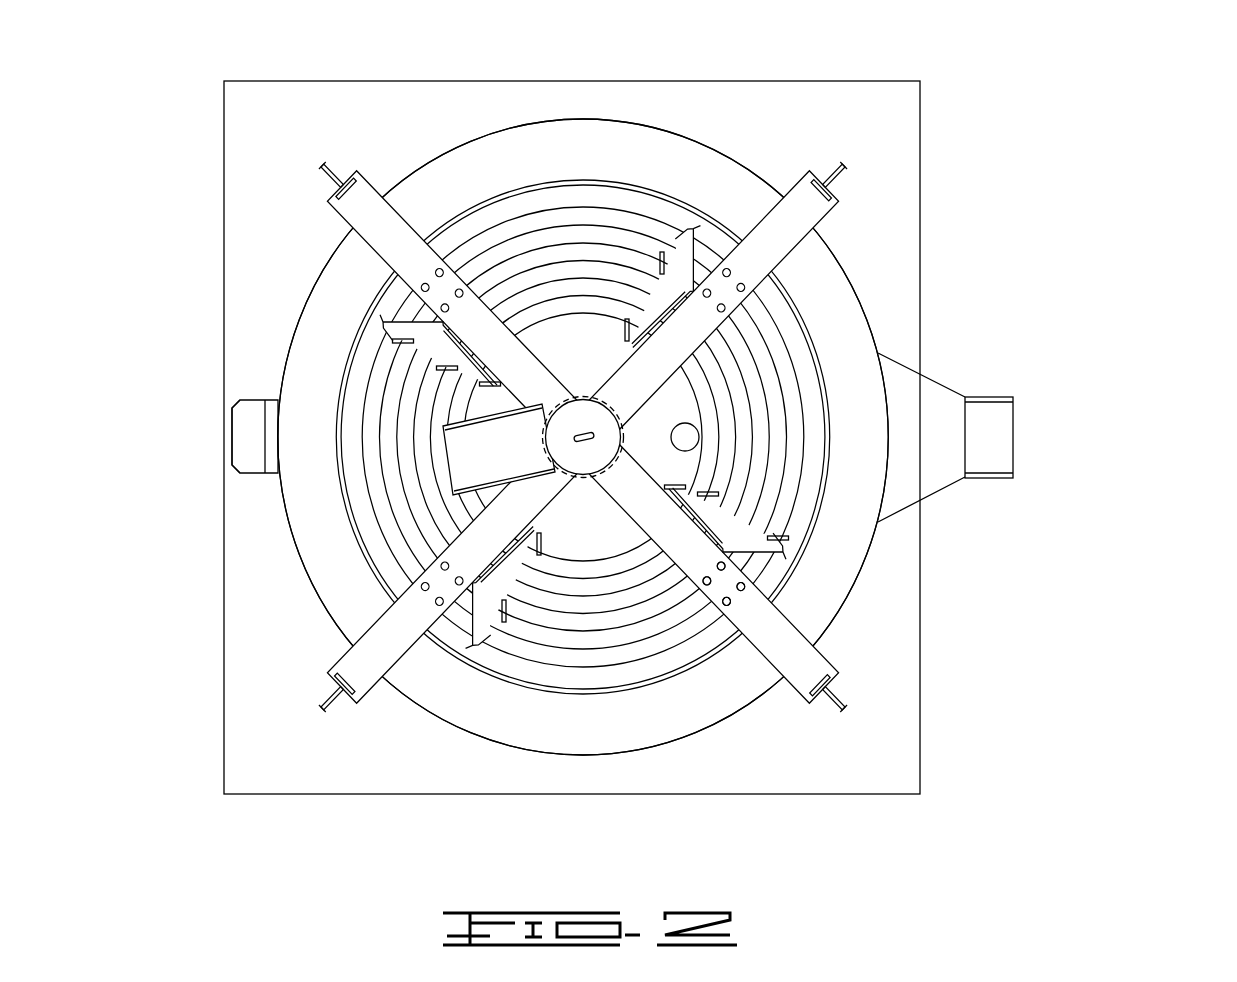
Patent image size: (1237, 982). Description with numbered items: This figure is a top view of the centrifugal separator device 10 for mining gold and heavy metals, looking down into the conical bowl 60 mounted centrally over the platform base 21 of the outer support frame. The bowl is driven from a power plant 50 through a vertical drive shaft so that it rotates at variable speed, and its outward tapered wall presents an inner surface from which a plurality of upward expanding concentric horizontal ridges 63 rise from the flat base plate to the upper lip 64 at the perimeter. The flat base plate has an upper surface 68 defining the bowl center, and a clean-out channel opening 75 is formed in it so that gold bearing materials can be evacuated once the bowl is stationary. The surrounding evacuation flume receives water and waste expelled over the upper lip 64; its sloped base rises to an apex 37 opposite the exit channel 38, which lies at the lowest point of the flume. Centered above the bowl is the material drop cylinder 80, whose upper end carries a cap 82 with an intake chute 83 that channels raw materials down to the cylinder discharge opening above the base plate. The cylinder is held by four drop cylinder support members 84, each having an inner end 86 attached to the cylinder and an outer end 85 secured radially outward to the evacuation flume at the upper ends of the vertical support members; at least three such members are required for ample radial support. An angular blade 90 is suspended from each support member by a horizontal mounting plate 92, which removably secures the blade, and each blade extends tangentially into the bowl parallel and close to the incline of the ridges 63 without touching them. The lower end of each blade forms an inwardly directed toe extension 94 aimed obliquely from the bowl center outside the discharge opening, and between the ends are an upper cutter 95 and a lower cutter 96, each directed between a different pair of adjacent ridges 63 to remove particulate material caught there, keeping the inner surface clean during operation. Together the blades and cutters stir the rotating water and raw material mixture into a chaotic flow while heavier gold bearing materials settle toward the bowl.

The centrifugal separator device 10 is at (1110, 89).
The platform base 21 is at (920, 163).
The apex 37 is at (275, 470).
The exit channel 38 is at (997, 431).
The power plant 50 is at (245, 445).
The conical bowl 60 is at (583, 197).
The concentric horizontal ridges 63 is at (433, 533).
The upper lip 64 is at (452, 642).
The upper surface 68 is at (562, 345).
The clean-out channel opening 75 is at (690, 440).
The material drop cylinder 80 is at (578, 488).
The cap 82 is at (585, 397).
The intake chute 83 is at (460, 458).
The drop cylinder support members 84 is at (482, 323).
The outer end 85 is at (800, 677).
The inner end 86 is at (757, 353).
The angular blade 90 is at (745, 535).
The mounting plate 92 is at (755, 570).
The toe extension 94 is at (475, 420).
The upper cutter 95 is at (397, 337).
The lower cutter 96 is at (455, 370).